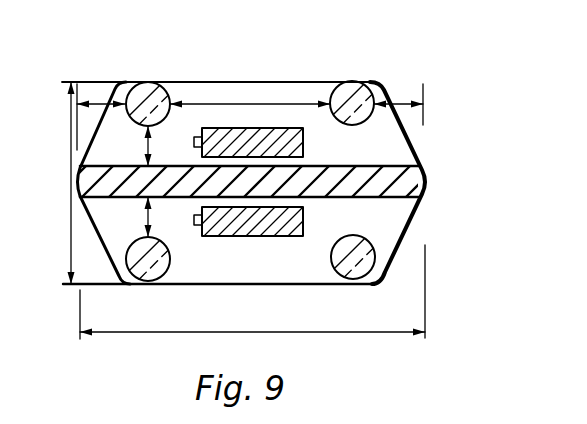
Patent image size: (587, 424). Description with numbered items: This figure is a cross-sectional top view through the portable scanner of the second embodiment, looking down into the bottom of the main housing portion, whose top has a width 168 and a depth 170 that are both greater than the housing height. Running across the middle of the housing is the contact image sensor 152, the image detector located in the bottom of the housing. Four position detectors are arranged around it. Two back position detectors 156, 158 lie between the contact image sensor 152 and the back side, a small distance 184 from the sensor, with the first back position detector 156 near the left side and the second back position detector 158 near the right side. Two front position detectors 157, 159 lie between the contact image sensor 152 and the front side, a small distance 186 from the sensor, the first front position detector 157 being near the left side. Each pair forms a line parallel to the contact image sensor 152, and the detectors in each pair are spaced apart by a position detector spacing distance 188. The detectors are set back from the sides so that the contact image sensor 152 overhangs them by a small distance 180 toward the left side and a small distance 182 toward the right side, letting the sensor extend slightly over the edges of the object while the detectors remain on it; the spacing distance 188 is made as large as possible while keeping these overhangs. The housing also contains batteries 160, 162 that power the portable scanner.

The contact image sensor 152 is at (425, 184).
The first back position detector 156 is at (148, 83).
The first front position detector 157 is at (164, 277).
The second back position detector 158 is at (382, 97).
The front position detector 159 is at (368, 270).
The battery 160 is at (302, 147).
The battery 162 is at (302, 232).
The width 168 is at (252, 331).
The depth 170 is at (70, 211).
The small distance 180 is at (100, 102).
The small distance 182 is at (393, 98).
The small distance 184 is at (146, 147).
The small distance 186 is at (146, 219).
The position detector spacing distance 188 is at (250, 103).